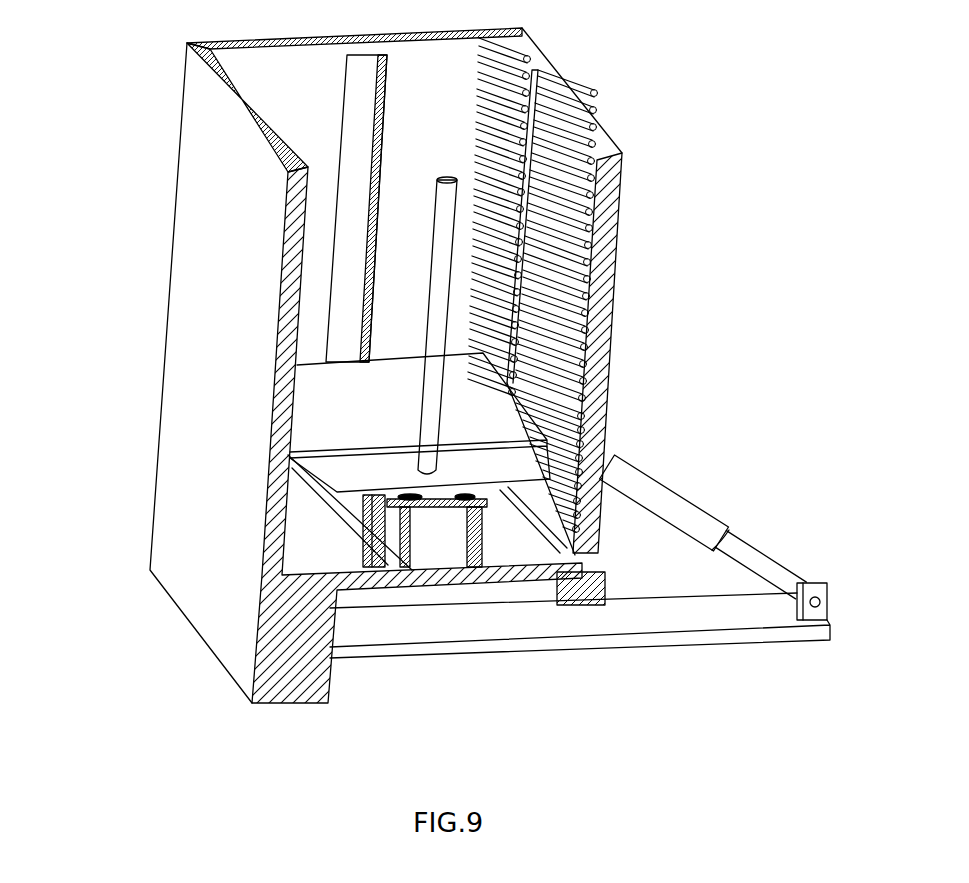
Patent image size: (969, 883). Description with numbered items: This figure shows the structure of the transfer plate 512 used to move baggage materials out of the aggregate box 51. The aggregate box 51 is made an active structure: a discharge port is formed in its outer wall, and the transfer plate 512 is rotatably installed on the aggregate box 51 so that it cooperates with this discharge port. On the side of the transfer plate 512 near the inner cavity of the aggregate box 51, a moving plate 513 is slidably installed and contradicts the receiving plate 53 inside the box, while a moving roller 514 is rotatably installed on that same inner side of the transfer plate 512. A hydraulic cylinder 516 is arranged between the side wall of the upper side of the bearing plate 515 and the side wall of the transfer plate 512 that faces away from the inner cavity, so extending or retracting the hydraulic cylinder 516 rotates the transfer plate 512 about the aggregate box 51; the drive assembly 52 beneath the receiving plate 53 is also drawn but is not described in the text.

The aggregate box 51 is at (228, 322).
The transfer plate 512 is at (602, 300).
The moving plate 513 is at (340, 412).
The moving roller 514 is at (600, 230).
The bearing plate 515 is at (518, 622).
The hydraulic cylinder 516 is at (610, 465).
The drive motor assembly 52 is at (430, 545).
The receiving plate 53 is at (345, 470).